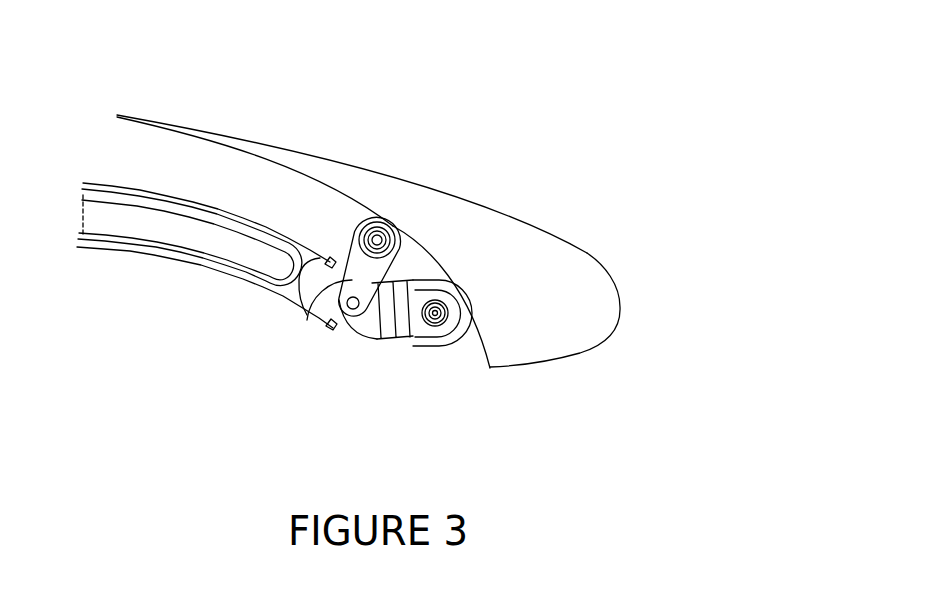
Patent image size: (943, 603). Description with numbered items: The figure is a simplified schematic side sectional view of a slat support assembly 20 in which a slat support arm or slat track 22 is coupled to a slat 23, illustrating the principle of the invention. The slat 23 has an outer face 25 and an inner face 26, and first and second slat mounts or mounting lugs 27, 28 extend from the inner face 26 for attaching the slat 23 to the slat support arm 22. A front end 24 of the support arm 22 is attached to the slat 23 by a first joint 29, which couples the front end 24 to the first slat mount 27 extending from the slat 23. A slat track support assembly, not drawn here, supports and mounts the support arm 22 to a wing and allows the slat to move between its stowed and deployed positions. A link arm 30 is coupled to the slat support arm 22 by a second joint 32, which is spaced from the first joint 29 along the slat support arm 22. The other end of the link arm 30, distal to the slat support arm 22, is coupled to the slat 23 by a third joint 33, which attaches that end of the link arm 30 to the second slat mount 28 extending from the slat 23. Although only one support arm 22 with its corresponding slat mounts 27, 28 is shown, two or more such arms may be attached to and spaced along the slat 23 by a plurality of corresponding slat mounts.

The slat support assembly 20 is at (508, 149).
The slat support arm 22 is at (228, 252).
The slat 23 is at (567, 278).
The front end 24 is at (383, 330).
The outer face 25 is at (526, 216).
The inner face 26 is at (328, 182).
The first slat mount 27 is at (463, 343).
The second slat mount 28 is at (377, 236).
The first joint 29 is at (445, 313).
The link arm 30 is at (307, 315).
The second joint 32 is at (353, 311).
The third joint 33 is at (400, 214).